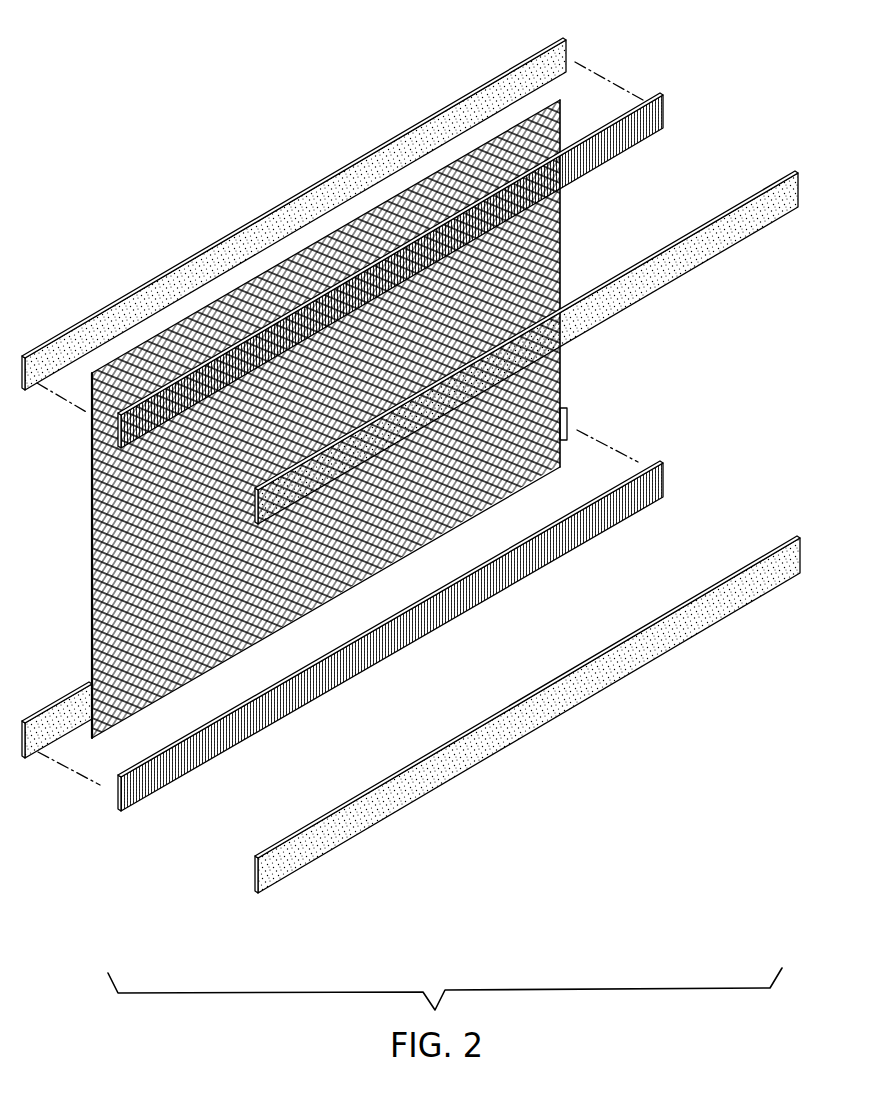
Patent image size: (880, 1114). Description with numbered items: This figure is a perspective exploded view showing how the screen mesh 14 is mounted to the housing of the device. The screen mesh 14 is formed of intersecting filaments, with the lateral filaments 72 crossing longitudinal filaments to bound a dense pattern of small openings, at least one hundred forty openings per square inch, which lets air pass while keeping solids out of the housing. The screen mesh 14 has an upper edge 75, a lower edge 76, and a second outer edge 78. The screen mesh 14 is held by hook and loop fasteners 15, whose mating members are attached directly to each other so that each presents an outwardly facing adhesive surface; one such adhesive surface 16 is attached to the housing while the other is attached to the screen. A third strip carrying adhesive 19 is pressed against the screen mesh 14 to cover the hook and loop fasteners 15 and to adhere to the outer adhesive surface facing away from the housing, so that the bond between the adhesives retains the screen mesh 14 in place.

The screen mesh 14 is at (115, 587).
The hook and loop fasteners 15 is at (270, 836).
The outwardly facing adhesive surface 16 is at (328, 838).
The adhesive 19 is at (42, 368).
The lateral filaments 72 is at (562, 234).
The upper edge 75 is at (503, 128).
The lower edge 76 is at (517, 496).
The second outer edge 78 is at (92, 508).